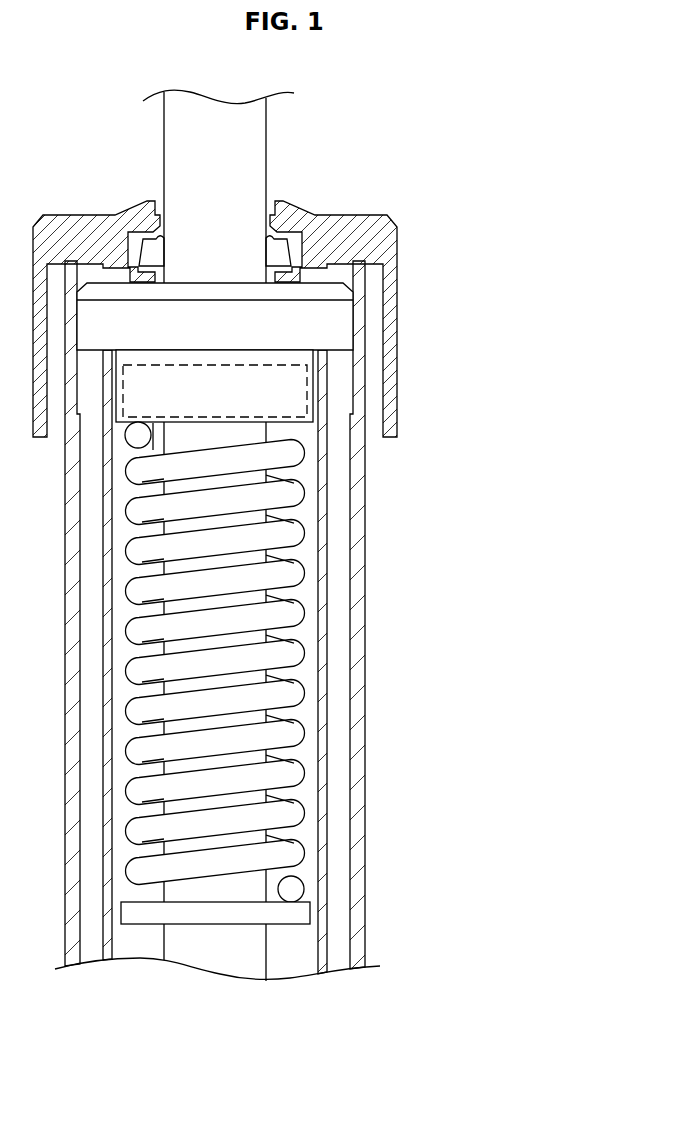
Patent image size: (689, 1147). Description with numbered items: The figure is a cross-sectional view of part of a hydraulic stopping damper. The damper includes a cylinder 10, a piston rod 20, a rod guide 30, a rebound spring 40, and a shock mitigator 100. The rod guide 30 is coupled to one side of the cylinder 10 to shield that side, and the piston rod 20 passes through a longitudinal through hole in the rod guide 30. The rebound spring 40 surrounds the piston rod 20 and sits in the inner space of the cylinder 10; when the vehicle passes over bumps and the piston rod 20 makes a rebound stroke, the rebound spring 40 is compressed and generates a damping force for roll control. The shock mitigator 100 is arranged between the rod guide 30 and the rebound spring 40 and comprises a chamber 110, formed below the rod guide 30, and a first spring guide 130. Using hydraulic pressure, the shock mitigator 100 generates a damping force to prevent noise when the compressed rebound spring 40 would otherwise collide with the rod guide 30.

The cylinder 10 is at (357, 717).
The piston rod 20 is at (240, 152).
The rod guide 30 is at (338, 325).
The rebound spring 40 is at (282, 571).
The shock mitigator 100 is at (336, 637).
The chamber 110 is at (308, 383).
The first spring guide 130 is at (252, 438).